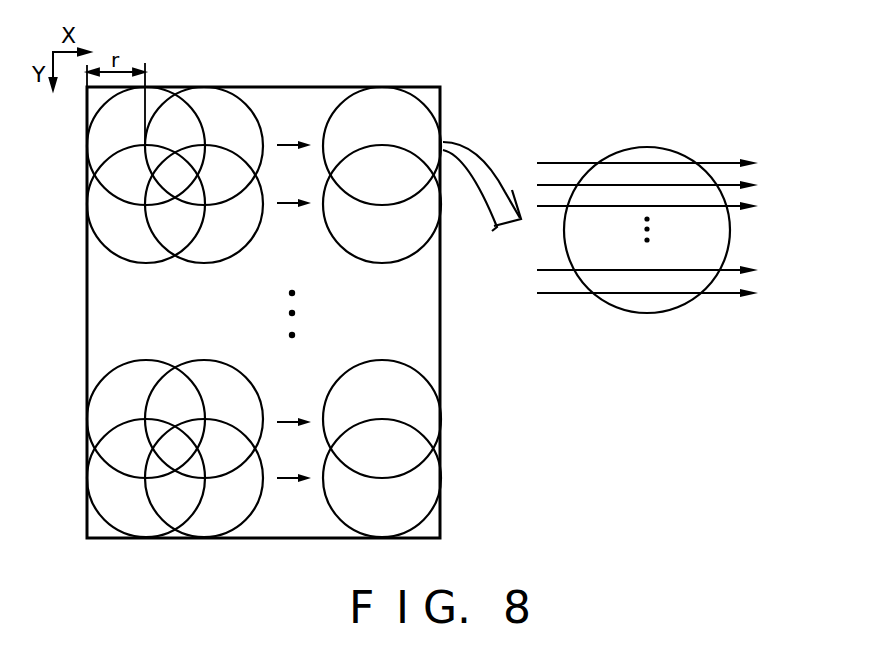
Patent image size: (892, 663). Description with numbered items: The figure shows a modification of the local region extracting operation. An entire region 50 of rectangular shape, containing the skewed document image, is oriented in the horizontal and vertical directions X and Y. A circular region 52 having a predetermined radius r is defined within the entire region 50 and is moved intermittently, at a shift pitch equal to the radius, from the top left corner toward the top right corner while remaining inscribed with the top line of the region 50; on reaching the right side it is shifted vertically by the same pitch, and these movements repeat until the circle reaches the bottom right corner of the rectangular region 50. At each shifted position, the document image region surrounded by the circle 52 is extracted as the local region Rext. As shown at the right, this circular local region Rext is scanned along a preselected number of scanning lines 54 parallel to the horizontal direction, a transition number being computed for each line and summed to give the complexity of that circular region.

The entire region 50 is at (441, 102).
The circular region 52 is at (200, 127).
The scanning lines 54 is at (547, 293).
The local region Rext is at (711, 232).